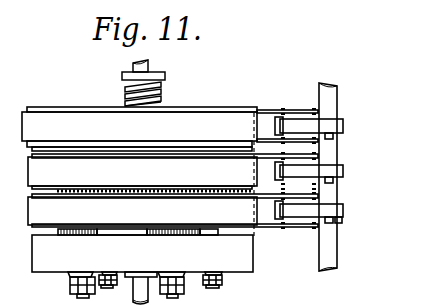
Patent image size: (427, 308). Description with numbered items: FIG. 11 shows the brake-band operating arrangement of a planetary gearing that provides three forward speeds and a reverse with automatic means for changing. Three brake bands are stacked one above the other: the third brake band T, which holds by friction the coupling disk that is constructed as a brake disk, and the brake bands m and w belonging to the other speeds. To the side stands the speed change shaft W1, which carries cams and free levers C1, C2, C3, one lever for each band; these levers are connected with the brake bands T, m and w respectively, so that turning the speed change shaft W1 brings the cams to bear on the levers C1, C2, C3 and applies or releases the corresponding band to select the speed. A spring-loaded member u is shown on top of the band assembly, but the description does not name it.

The third brake band T is at (139, 172).
The brake band m is at (173, 172).
The brake band w is at (173, 214).
The spring-loaded screw u is at (158, 95).
The speed change shaft W1 is at (323, 94).
The free lever C1 is at (343, 126).
The free lever C2 is at (351, 168).
The free lever C3 is at (351, 207).